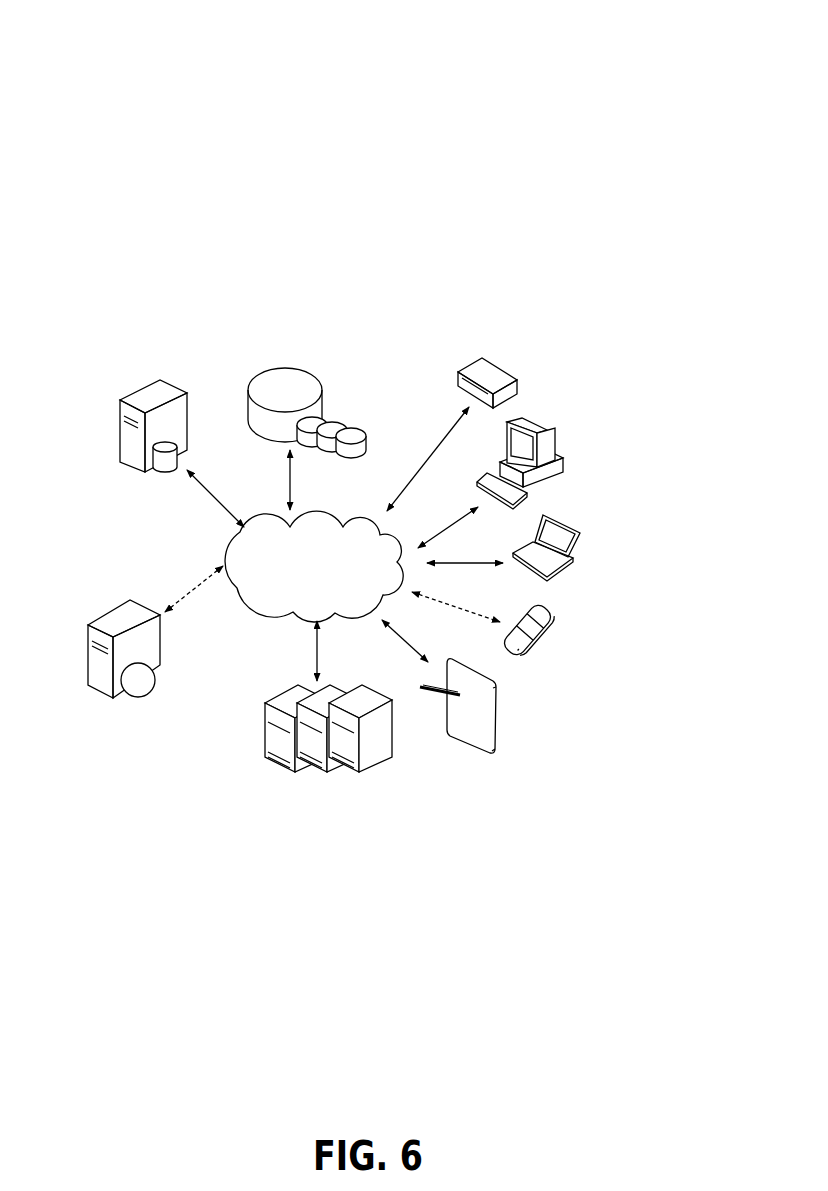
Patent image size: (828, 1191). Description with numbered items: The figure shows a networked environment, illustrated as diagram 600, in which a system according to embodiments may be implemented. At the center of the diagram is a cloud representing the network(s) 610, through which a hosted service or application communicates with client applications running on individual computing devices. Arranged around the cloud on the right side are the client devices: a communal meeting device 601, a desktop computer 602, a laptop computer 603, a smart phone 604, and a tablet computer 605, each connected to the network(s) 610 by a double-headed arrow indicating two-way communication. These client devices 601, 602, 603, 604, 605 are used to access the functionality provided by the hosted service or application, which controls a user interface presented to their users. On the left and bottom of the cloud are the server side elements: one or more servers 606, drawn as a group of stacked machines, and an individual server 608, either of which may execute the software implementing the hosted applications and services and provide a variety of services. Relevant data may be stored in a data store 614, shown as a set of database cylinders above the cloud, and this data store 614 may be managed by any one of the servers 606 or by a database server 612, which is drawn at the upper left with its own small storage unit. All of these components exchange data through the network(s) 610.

The diagram 600 is at (603, 28).
The communal meeting device 601 is at (493, 351).
The desktop computer 602 is at (561, 425).
The laptop computer 603 is at (578, 512).
The smart phone 604 is at (556, 608).
The tablet computer 605 is at (503, 696).
The servers 606 is at (288, 682).
The individual server 608 is at (107, 604).
The network(s) 610 is at (321, 499).
The database server 612 is at (163, 479).
The data store 614 is at (299, 350).